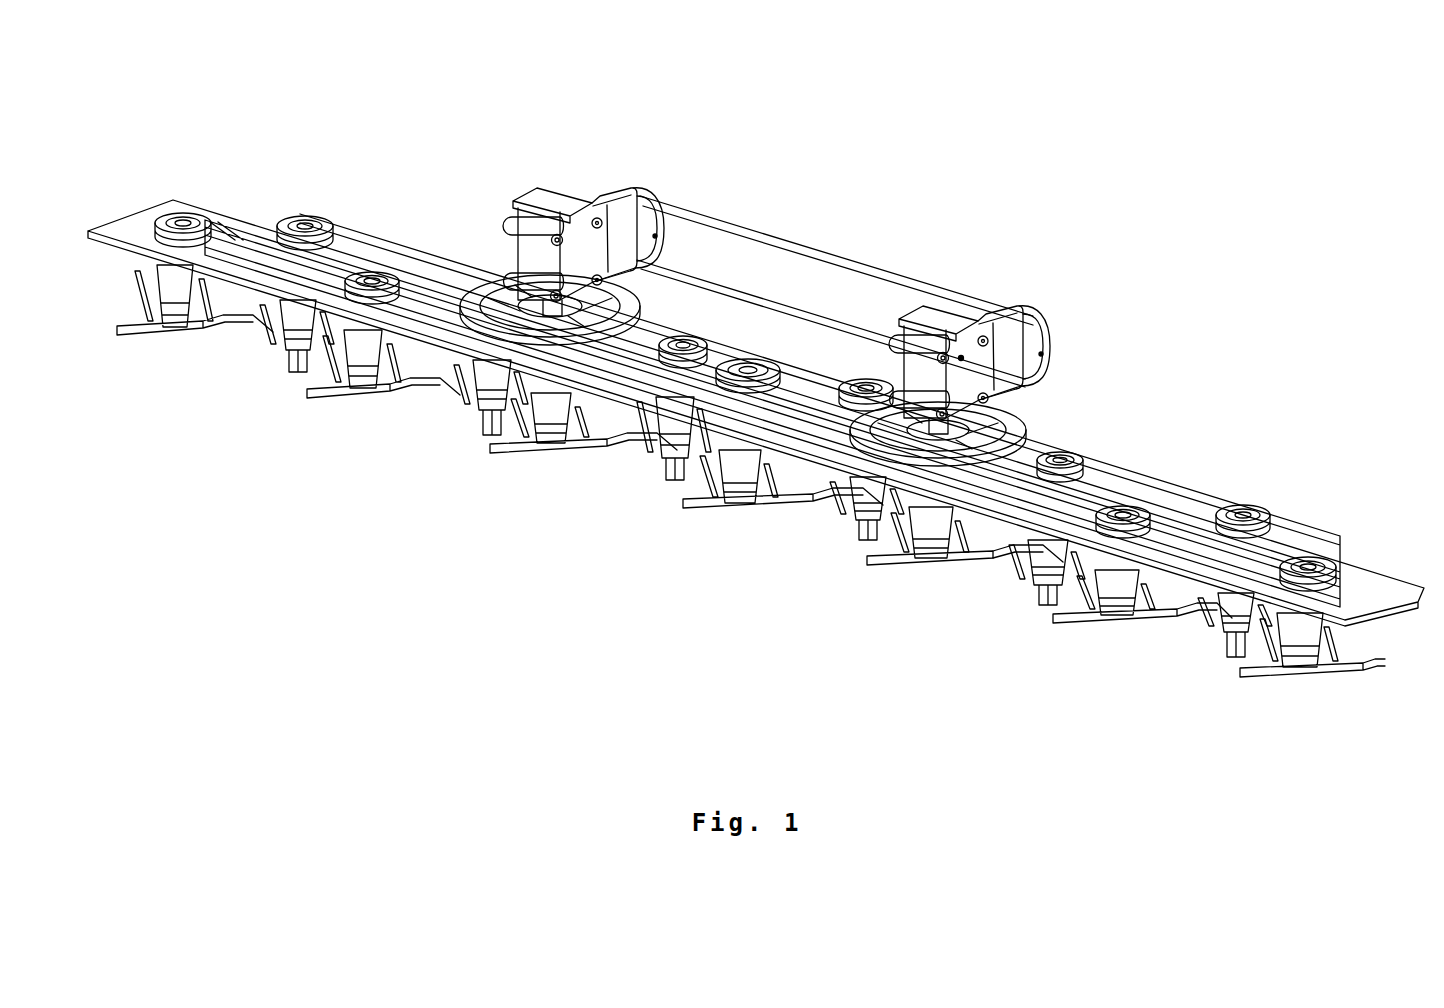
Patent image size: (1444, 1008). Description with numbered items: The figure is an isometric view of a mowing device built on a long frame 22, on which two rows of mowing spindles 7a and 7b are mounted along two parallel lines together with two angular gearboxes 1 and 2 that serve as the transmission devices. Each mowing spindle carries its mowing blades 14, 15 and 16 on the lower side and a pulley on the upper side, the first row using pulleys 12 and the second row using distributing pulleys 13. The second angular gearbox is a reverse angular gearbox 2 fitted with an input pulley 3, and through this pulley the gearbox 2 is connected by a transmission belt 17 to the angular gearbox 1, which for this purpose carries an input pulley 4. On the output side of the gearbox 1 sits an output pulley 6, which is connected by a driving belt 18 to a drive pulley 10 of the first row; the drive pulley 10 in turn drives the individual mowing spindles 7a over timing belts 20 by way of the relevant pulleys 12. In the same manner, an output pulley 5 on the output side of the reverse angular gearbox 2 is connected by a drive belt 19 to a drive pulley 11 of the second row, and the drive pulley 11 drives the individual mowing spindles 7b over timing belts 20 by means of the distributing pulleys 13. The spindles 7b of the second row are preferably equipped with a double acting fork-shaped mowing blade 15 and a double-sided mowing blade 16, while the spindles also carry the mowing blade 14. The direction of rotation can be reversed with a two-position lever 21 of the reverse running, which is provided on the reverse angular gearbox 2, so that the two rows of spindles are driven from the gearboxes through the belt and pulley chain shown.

The angular gearbox 1 is at (575, 240).
The reverse angular gearbox 2 is at (1030, 312).
The input pulley of the gearbox 2 3 is at (1045, 340).
The input pulley of the gearbox 1 4 is at (660, 225).
The output pulley of the gearbox 2 5 is at (858, 537).
The output pulley of the gearbox 1 6 is at (478, 290).
The mowing spindles of the first row 7a is at (1302, 648).
The mowing spindles of the second row 7b is at (1233, 607).
The drive pulley of the first row 10 is at (745, 378).
The drive pulley of the second row 11 is at (873, 378).
The pulleys of the first row of mowing spindles 12 is at (1330, 552).
The distributing pulleys of the second row of mowing spindles 13 is at (1258, 507).
The mowing blade 14 is at (1132, 615).
The double acting fork-shaped mowing blade 15 is at (1008, 558).
The double-sided mowing blade 16 is at (1043, 605).
The transmission belt 17 is at (907, 280).
The driving belt 18 is at (648, 362).
The drive belt 19 is at (847, 386).
The timing belts 20 is at (363, 233).
The two-position lever of the reverse running 21 is at (987, 302).
The frame 22 is at (147, 218).